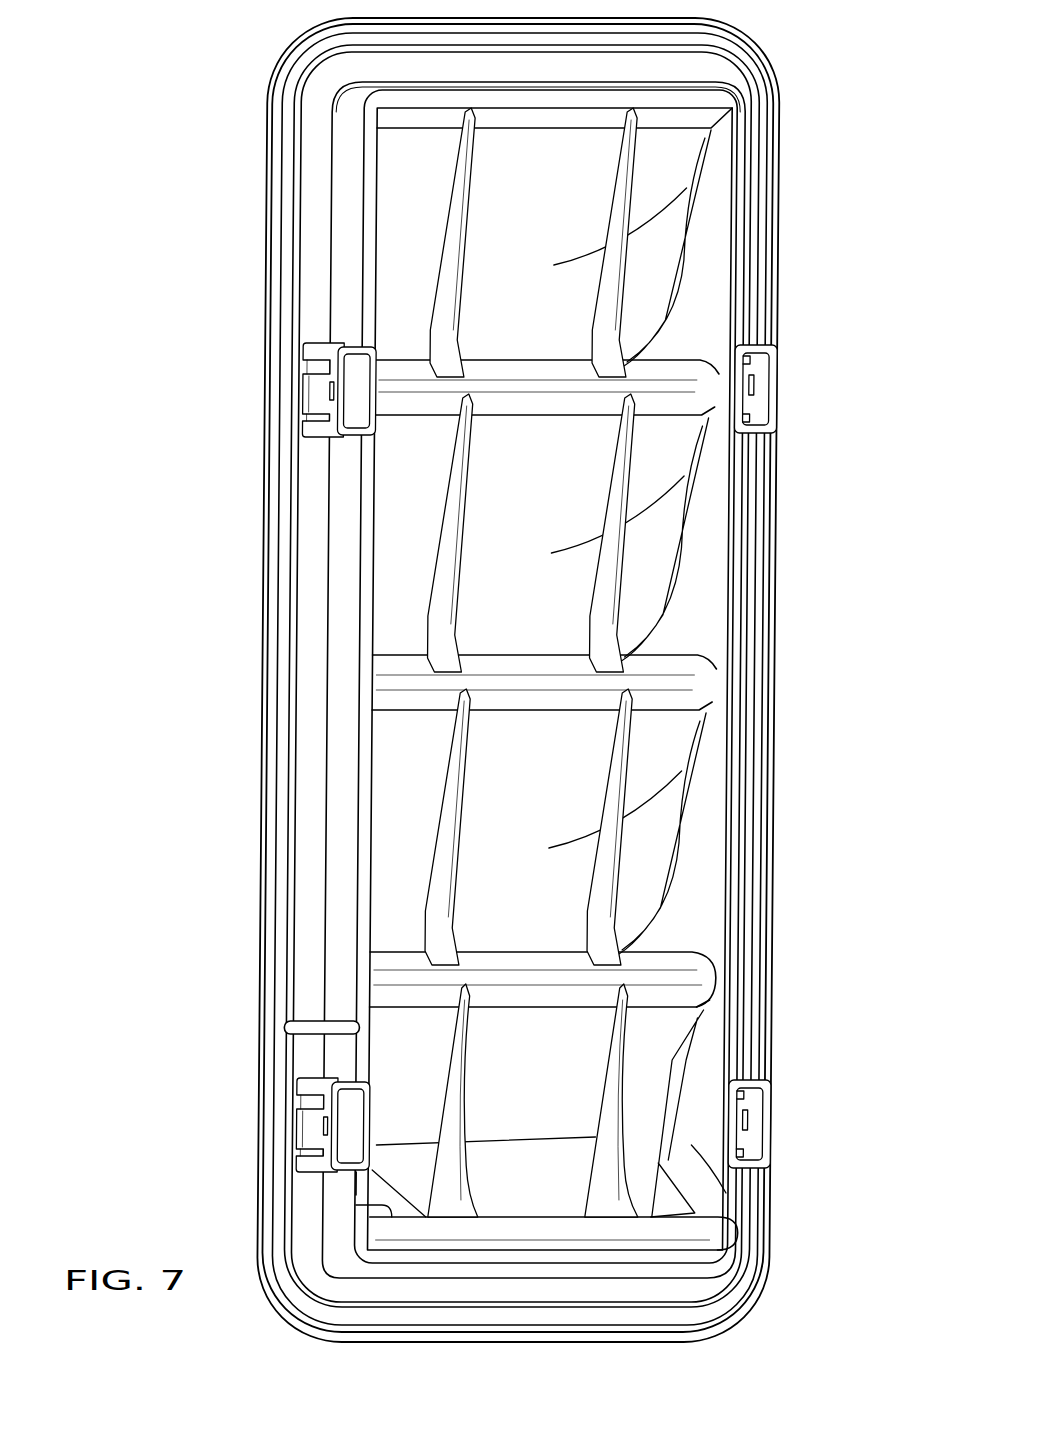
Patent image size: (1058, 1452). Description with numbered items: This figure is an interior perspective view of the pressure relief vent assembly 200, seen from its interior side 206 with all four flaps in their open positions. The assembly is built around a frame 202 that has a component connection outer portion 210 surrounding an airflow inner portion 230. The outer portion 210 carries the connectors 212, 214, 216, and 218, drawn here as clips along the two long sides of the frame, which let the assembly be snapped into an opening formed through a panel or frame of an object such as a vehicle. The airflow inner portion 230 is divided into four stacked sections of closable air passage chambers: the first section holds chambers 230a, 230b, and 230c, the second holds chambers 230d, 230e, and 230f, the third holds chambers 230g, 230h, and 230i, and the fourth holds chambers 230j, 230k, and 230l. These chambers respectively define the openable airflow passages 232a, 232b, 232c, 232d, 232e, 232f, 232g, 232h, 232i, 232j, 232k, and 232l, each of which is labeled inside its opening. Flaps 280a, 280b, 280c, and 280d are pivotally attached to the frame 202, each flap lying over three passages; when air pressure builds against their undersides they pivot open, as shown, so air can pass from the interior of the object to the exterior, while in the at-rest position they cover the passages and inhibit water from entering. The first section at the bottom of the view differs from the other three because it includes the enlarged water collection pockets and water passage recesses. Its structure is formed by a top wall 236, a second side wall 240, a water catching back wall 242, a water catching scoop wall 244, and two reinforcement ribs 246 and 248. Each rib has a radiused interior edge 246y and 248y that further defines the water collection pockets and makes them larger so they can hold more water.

The pressure relief vent assembly 200 is at (266, 1348).
The frame 202 is at (780, 786).
The interior side 206 is at (723, 142).
The component connection outer portion 210 is at (786, 473).
The connector 212 is at (331, 1171).
The connector 214 is at (333, 431).
The connector 216 is at (778, 1130).
The connector 218 is at (779, 392).
The airflow inner portion 230 is at (721, 207).
The closable air passage chamber 230a is at (448, 1197).
The closable air passage chamber 230b is at (607, 1193).
The closable air passage chamber 230c is at (700, 1163).
The closable air passage chamber 230d is at (440, 933).
The closable air passage chamber 230e is at (600, 938).
The closable air passage chamber 230f is at (690, 937).
The closable air passage chamber 230g is at (440, 637).
The closable air passage chamber 230h is at (600, 643).
The closable air passage chamber 230i is at (711, 581).
The closable air passage chamber 230j is at (440, 341).
The closable air passage chamber 230k is at (600, 346).
The closable air passage chamber 230l is at (712, 248).
The openable airflow passage 232a is at (435, 1068).
The openable airflow passage 232b is at (556, 1054).
The openable airflow passage 232c is at (685, 1044).
The openable airflow passage 232d is at (441, 792).
The openable airflow passage 232e is at (556, 792).
The openable airflow passage 232f is at (687, 754).
The openable airflow passage 232g is at (444, 501).
The openable airflow passage 232h is at (556, 501).
The openable airflow passage 232i is at (688, 457).
The openable airflow passage 232j is at (440, 214).
The openable airflow passage 232k is at (556, 214).
The openable airflow passage 232l is at (688, 172).
The top wall 236 is at (672, 996).
The second side wall 240 is at (362, 1190).
The water catching back wall 242 is at (530, 1232).
The water catching scoop wall 244 is at (567, 1213).
The reinforcement rib 246 is at (603, 1160).
The curved interior edge 246y is at (613, 1122).
The reinforcement rib 248 is at (460, 1166).
The curved interior edge 248y is at (457, 1138).
The flap 280a is at (620, 1123).
The flap 280b is at (640, 883).
The flap 280c is at (640, 541).
The flap 280d is at (700, 240).